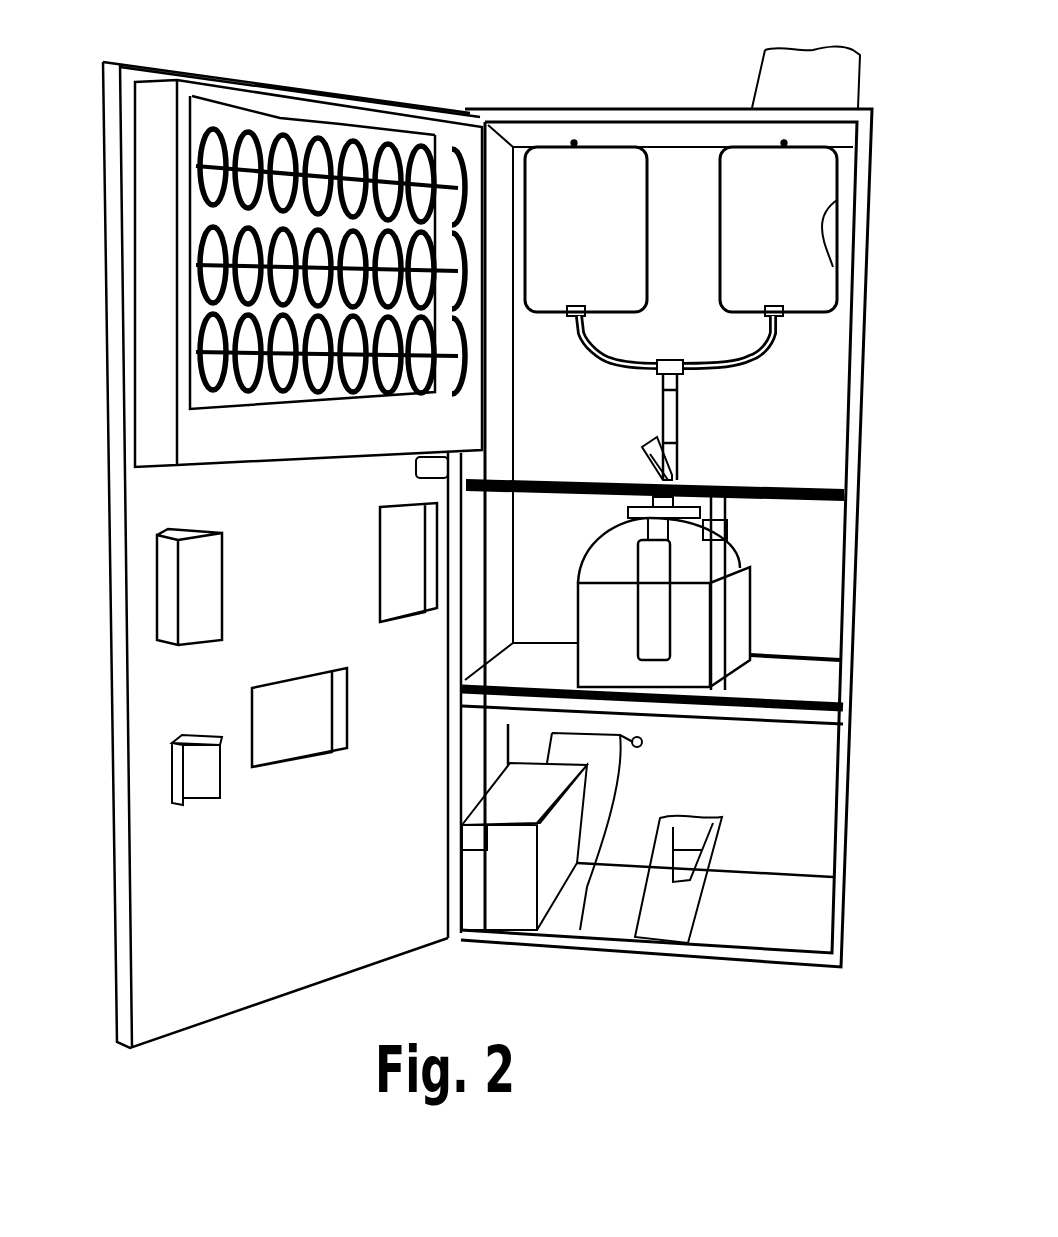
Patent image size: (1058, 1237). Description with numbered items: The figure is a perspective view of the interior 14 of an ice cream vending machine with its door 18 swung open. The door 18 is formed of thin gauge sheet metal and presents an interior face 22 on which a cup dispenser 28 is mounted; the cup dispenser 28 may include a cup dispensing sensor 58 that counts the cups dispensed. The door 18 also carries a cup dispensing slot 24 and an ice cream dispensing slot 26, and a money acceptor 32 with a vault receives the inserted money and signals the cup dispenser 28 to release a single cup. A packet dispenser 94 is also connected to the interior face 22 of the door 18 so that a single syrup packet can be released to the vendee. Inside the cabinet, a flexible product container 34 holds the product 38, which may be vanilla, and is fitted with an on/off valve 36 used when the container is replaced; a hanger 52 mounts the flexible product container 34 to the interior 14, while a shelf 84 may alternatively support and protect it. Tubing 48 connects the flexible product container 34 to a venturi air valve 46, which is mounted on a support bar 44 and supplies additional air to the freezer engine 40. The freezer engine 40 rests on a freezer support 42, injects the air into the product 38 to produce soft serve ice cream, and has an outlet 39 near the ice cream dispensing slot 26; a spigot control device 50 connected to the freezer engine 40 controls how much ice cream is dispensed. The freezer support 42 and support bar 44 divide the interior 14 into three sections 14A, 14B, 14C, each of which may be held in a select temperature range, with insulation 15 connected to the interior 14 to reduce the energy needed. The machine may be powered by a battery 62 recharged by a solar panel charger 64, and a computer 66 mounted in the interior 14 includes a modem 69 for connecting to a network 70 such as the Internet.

The interior 14 is at (787, 810).
The section 14A is at (838, 318).
The section 14B is at (823, 560).
The section 14C is at (805, 848).
The insulation 15 is at (488, 574).
The door 18 is at (113, 917).
The interior face 22 is at (285, 888).
The cup dispensing slot 24 is at (398, 520).
The ice cream dispensing slot 26 is at (248, 710).
The cup dispenser 28 is at (158, 297).
The money acceptor 32 is at (148, 590).
The flexible product container 34 is at (681, 226).
The valve 36 is at (783, 317).
The product 38 is at (832, 238).
The outlet 39 is at (667, 670).
The freezer engine 40 is at (757, 625).
The freezer support 42 is at (790, 723).
The support bar 44 is at (797, 487).
The venturi air valve 46 is at (680, 453).
The tubing 48 is at (745, 362).
The spigot control device 50 is at (740, 530).
The hanger 52 is at (576, 143).
The cup dispensing sensor 58 is at (412, 466).
The battery 62 is at (698, 908).
The solar panel charger 64 is at (765, 50).
The computer 66 is at (553, 875).
The modem 69 is at (493, 913).
The network 70 is at (583, 873).
The shelf 84 is at (563, 312).
The packet dispenser 94 is at (170, 777).